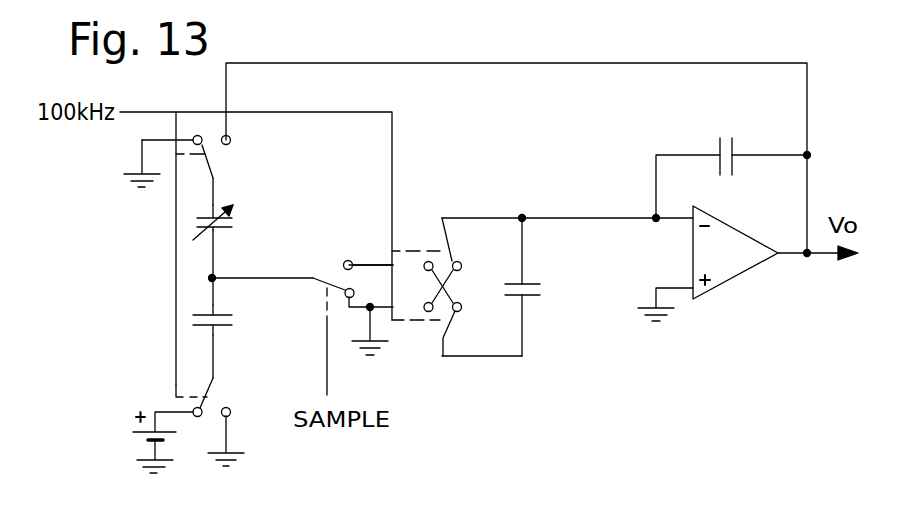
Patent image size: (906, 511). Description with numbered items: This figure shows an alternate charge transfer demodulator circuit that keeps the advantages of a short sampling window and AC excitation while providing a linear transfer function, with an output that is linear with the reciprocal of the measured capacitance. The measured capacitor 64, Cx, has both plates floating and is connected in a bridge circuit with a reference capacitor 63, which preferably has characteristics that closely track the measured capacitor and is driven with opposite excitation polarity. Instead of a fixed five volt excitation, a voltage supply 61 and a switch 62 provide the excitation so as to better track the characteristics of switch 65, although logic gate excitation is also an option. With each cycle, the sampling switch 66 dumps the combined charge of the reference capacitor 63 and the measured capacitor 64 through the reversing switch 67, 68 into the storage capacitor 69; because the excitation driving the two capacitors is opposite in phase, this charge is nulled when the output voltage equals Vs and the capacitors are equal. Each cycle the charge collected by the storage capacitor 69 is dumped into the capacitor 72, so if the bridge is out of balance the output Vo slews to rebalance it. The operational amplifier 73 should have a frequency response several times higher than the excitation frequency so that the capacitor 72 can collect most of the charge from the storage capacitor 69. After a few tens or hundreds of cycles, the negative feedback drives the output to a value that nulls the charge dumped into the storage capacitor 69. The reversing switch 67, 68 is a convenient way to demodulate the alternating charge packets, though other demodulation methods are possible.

The voltage supply 61 is at (125, 403).
The switch 62 is at (218, 397).
The reference capacitor 63 is at (233, 312).
The measured capacitor 64 is at (240, 222).
The switch 65 is at (219, 154).
The sampling switch 66 is at (365, 240).
The reversing switch 67 is at (433, 232).
The reversing switch 68 is at (427, 343).
The storage capacitor 69 is at (513, 302).
The capacitor 72 is at (707, 133).
The operational amplifier 73 is at (735, 280).